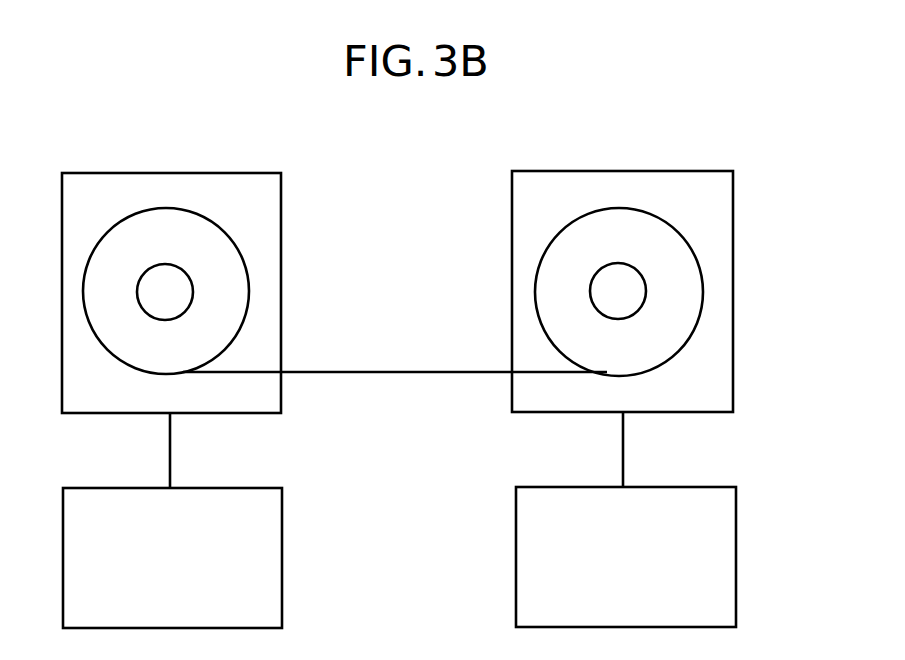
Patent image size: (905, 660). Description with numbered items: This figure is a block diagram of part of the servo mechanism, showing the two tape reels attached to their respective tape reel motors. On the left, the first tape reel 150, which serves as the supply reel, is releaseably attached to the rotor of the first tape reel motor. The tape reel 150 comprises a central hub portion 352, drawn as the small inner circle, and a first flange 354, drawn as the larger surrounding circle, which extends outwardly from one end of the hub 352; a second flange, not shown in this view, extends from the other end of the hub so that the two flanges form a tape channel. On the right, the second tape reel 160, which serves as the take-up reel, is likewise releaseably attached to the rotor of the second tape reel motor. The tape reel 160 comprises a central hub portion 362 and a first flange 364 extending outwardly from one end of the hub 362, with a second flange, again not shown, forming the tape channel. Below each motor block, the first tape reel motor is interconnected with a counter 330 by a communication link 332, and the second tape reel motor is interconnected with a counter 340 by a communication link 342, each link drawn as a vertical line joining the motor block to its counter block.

The tape reel 150 is at (230, 238).
The tape reel 160 is at (682, 238).
The first flange 354 is at (168, 208).
The first flange 364 is at (620, 208).
The central hub portion 352 is at (193, 290).
The central hub portion 362 is at (646, 290).
The communication link 332 is at (170, 456).
The communication link 342 is at (623, 454).
The counter 330 is at (196, 576).
The counter 340 is at (651, 575).